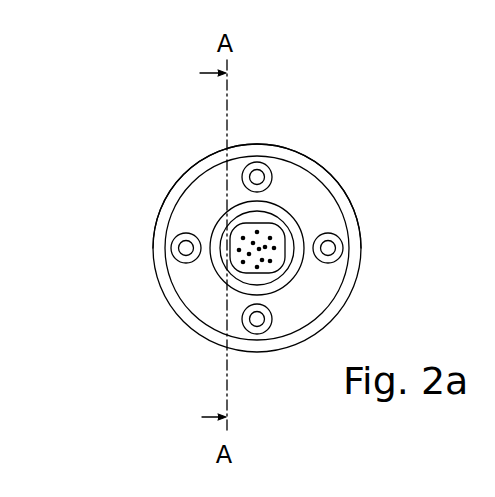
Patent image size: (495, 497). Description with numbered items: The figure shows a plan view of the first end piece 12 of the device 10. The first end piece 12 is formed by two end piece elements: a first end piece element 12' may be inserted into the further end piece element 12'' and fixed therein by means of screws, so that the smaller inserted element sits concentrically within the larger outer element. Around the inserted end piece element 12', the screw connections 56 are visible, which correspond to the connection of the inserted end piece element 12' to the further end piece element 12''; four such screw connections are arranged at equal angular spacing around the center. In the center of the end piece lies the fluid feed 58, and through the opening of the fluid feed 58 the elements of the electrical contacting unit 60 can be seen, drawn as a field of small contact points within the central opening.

The device 10 is at (175, 491).
The first end piece 12 is at (259, 215).
The first end piece element 12' is at (297, 248).
The further end piece element 12'' is at (257, 154).
The screw connections 56 is at (184, 248).
The fluid feed 58 is at (218, 221).
The electrical contacting unit 60 is at (278, 237).